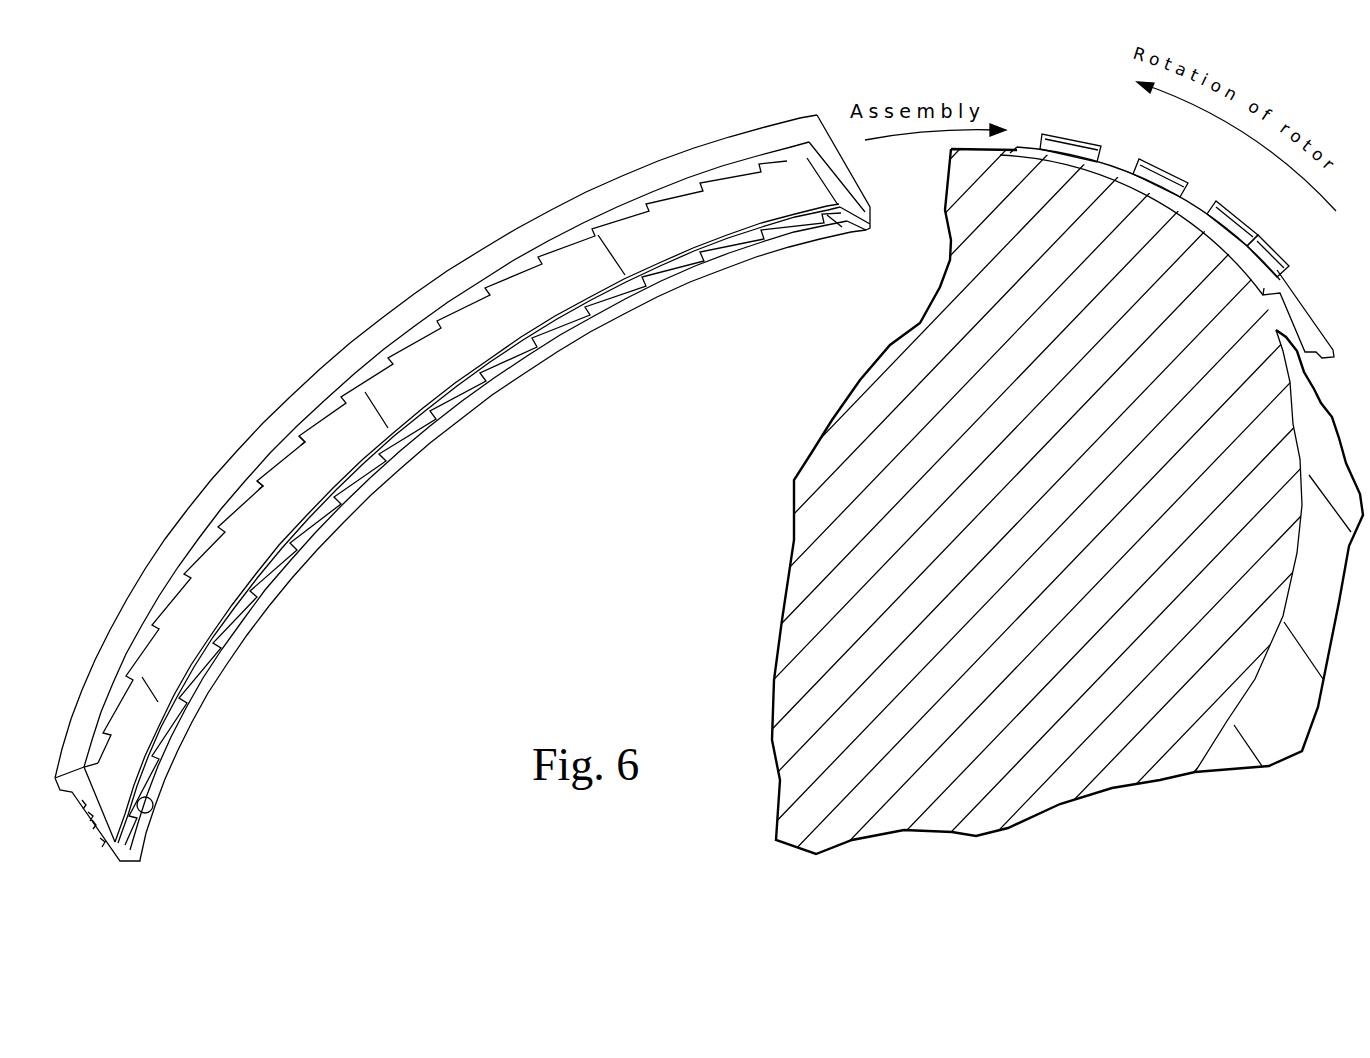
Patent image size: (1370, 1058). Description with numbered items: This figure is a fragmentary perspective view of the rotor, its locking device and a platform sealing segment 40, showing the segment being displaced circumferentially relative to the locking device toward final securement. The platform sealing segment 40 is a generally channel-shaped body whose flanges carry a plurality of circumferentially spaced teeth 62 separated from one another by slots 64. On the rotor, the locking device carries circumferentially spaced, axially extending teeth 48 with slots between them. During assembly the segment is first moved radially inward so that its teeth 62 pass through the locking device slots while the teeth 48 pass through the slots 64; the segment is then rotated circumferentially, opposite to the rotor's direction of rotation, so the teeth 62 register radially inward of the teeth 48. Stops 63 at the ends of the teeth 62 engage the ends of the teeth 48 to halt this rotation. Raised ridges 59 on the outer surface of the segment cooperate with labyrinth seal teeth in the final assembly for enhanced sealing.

The platform sealing segment 40 is at (368, 328).
The teeth 48 is at (1143, 163).
The teeth 62 is at (300, 410).
The slots 64 is at (258, 478).
The stops 63 is at (152, 808).
The raised ridges 59 is at (68, 812).